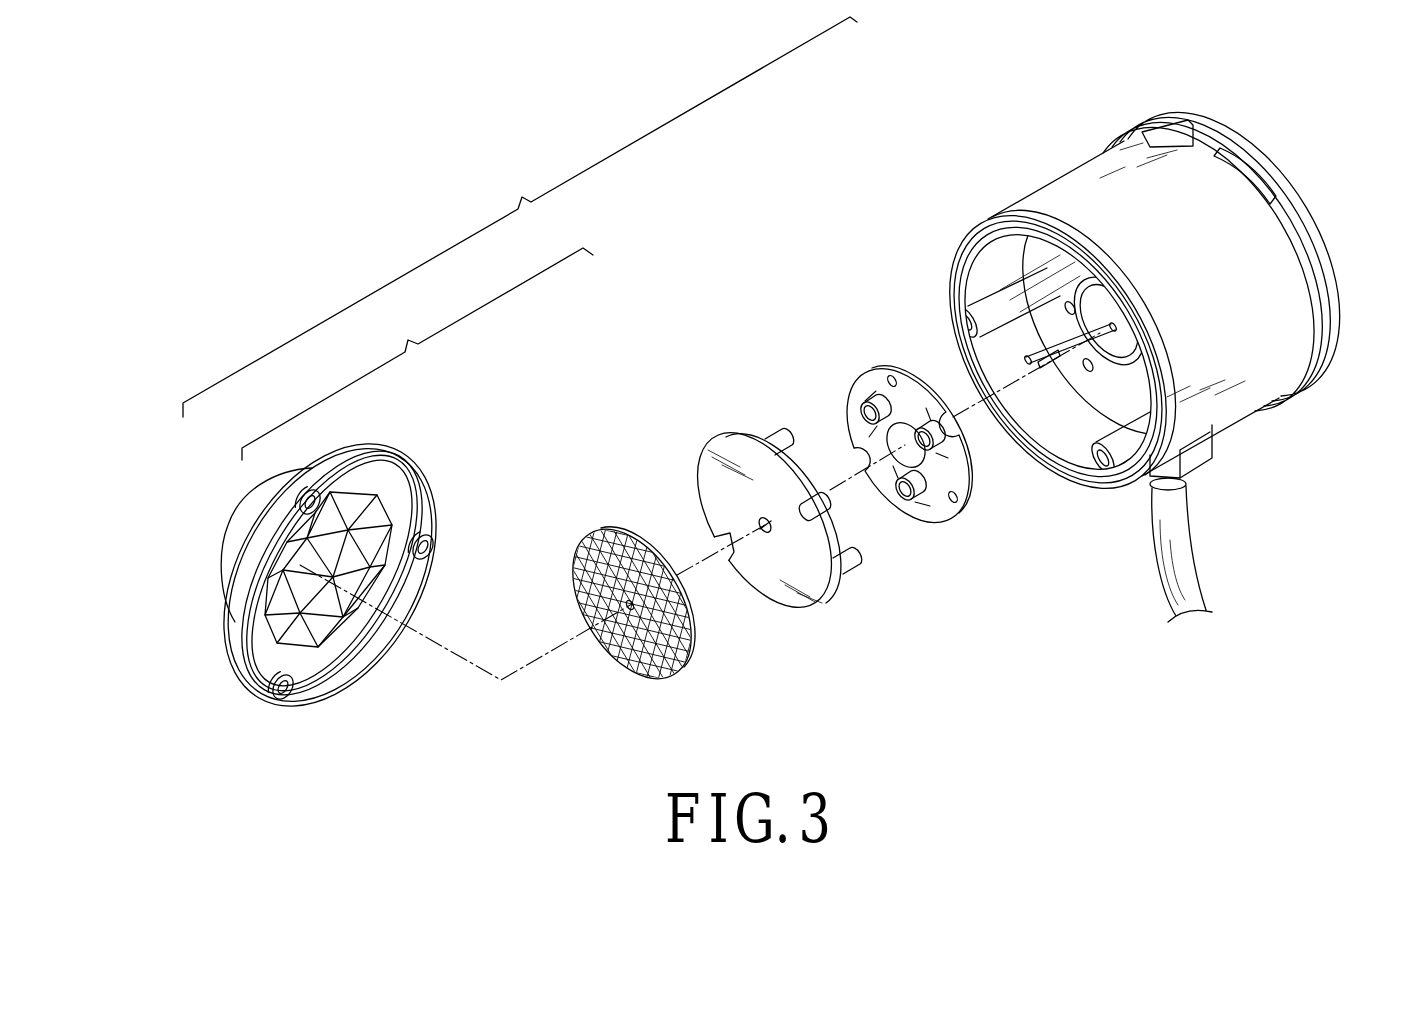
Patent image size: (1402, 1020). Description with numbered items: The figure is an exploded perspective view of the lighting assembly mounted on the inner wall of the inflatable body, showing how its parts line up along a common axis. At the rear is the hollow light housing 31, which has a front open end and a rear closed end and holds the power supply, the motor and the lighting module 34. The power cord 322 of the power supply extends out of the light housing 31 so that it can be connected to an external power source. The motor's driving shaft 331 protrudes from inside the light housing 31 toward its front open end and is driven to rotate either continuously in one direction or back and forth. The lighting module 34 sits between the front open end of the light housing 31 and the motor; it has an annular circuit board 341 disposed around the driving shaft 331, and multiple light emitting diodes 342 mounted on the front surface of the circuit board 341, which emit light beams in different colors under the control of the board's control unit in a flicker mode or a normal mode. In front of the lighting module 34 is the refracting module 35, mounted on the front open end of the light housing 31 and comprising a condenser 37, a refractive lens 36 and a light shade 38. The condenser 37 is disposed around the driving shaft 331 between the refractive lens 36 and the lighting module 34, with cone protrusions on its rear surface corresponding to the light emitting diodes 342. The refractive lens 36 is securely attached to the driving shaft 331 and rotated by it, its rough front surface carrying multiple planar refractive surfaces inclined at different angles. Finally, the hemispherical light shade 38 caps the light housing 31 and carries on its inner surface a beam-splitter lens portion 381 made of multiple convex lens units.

The light housing 31 is at (1113, 367).
The power cord 322 is at (1182, 553).
The driving shaft 331 is at (1085, 338).
The lighting module 34 is at (906, 454).
The circuit board 341 is at (958, 488).
The light emitting diodes 342 is at (903, 503).
The refracting module 35 is at (520, 238).
The refractive lens 36 is at (690, 648).
The condenser 37 is at (710, 485).
The light shade 38 is at (326, 575).
The beam-splitter lens portion 381 is at (362, 515).